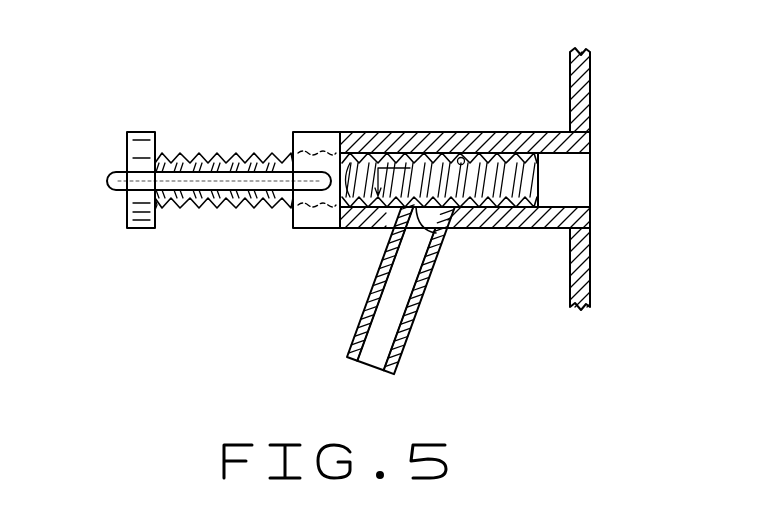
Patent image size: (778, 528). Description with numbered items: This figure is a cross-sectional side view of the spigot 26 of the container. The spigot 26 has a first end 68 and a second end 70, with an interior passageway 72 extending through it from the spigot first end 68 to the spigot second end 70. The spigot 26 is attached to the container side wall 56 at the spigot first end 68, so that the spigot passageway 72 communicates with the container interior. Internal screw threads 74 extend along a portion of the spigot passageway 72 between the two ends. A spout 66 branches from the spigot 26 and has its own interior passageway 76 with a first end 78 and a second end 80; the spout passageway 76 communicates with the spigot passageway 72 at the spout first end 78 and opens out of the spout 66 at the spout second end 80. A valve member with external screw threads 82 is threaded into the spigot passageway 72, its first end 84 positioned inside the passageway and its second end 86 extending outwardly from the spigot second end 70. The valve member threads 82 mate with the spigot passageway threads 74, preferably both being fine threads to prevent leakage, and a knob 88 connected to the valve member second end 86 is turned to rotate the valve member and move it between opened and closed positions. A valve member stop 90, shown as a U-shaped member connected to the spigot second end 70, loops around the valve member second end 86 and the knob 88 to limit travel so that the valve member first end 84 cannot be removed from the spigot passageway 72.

The spigot 26 is at (322, 132).
The container side wall 56 is at (570, 68).
The spout 66 is at (413, 335).
The spigot first end 68 is at (592, 144).
The spigot second end 70 is at (293, 133).
The spigot passageway 72 is at (567, 182).
The spigot passageway screw threads 74 is at (460, 157).
The spout passageway 76 is at (400, 280).
The spout first end 78 is at (422, 226).
The spout second end 80 is at (372, 367).
The valve member screw threads 82 is at (222, 152).
The valve member first end 84 is at (415, 158).
The valve member second end 86 is at (157, 203).
The knob 88 is at (142, 138).
The valve member stop 90 is at (112, 175).